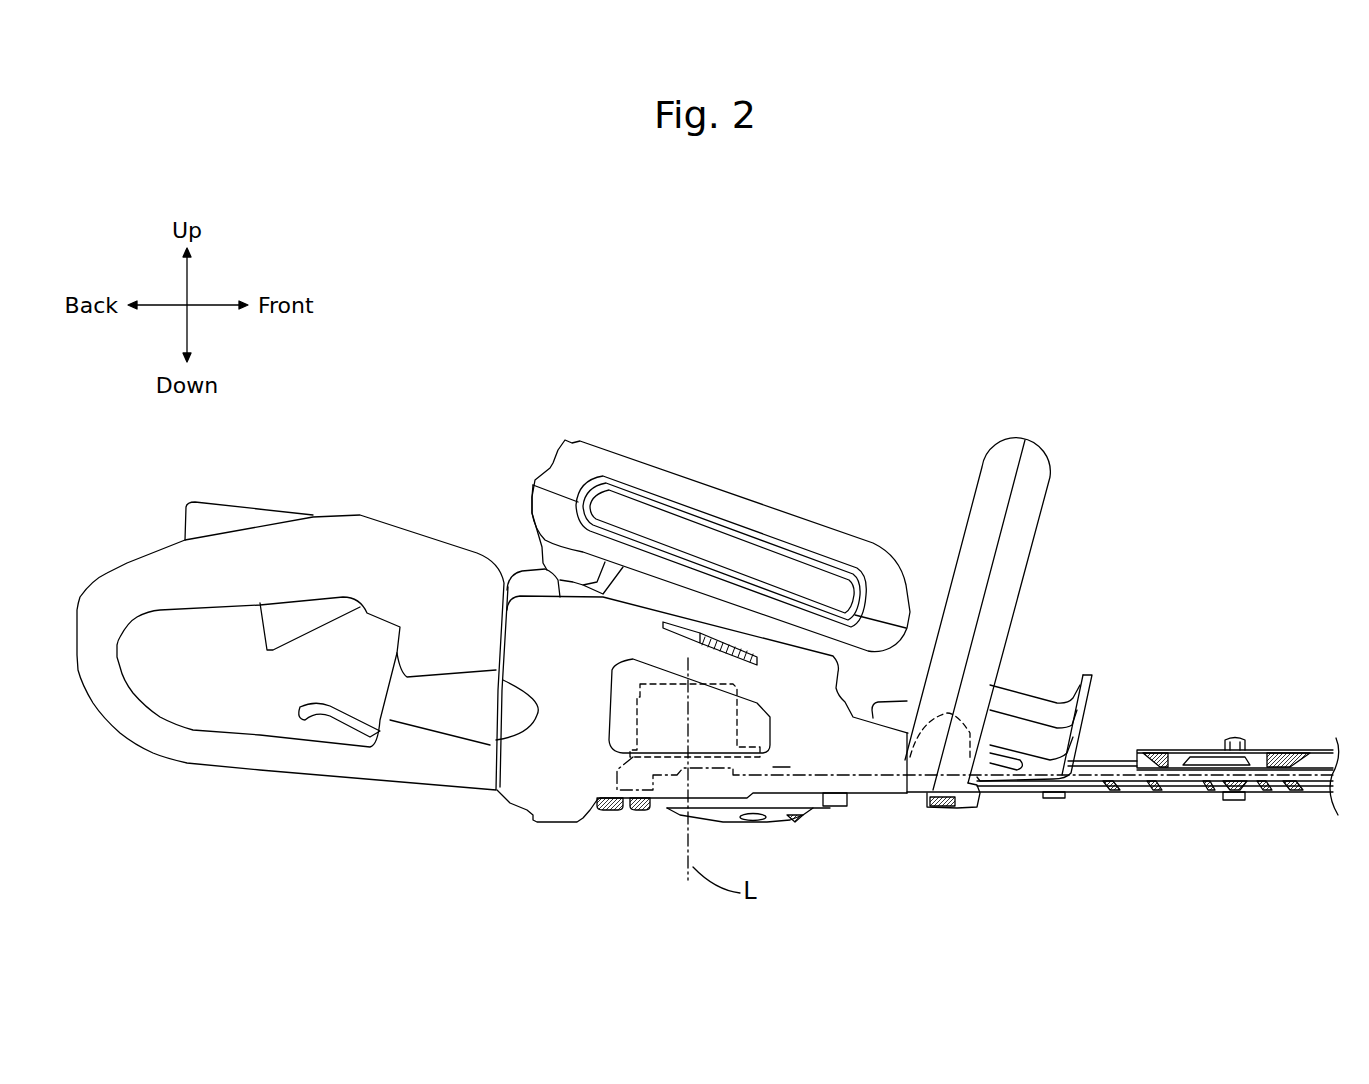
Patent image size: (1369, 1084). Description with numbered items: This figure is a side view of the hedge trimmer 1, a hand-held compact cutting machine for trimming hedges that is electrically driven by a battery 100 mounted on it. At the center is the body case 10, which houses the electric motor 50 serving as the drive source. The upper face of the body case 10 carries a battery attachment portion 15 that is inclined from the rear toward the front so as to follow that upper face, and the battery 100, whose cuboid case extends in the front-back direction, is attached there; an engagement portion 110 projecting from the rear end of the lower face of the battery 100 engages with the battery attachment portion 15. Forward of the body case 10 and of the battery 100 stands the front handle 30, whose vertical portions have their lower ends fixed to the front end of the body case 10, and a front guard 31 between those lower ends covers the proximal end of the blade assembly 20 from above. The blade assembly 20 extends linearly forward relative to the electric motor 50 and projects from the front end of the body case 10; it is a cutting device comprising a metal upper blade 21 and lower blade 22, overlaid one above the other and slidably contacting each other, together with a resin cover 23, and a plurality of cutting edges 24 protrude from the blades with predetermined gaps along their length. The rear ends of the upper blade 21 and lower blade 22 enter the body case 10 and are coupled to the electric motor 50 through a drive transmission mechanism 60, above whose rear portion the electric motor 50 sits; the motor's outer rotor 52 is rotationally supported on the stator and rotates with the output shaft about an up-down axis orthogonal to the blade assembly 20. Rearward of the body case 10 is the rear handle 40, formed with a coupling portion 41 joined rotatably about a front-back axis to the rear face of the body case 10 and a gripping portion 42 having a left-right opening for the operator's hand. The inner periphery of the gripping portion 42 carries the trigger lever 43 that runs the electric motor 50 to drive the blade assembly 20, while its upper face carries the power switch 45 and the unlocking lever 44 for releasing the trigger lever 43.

The hedge trimmer 1 is at (658, 397).
The body case 10 is at (560, 803).
The battery attachment portion 15 is at (667, 607).
The blade assembly 20 is at (1280, 796).
The upper blade 21 is at (1103, 784).
The lower blade 22 is at (1197, 786).
The resin cover 23 is at (1205, 750).
The cutting edges 24 is at (1150, 786).
The front handle 30 is at (1006, 450).
The front guard 31 is at (1090, 678).
The rear handle 40 is at (342, 530).
The coupling portion 41 is at (463, 587).
The gripping portion 42 is at (153, 573).
The trigger lever 43 is at (280, 630).
The unlocking lever 44 is at (223, 520).
The power switch 45 is at (430, 530).
The electric motor 50 is at (753, 690).
The outer rotor 52 is at (633, 717).
The drive transmission mechanism 60 is at (772, 767).
The battery 100 is at (760, 513).
The engagement portion 110 is at (565, 588).